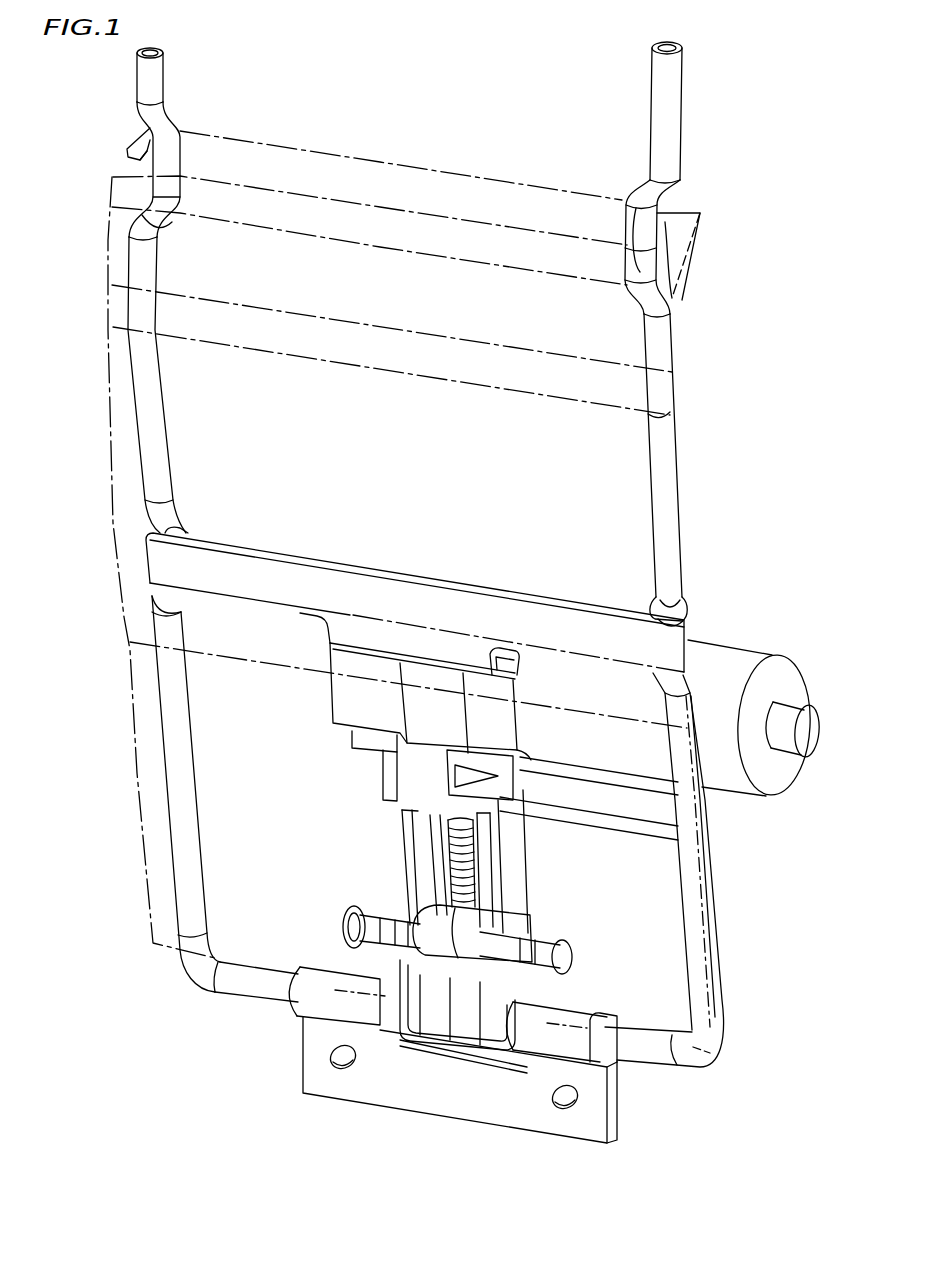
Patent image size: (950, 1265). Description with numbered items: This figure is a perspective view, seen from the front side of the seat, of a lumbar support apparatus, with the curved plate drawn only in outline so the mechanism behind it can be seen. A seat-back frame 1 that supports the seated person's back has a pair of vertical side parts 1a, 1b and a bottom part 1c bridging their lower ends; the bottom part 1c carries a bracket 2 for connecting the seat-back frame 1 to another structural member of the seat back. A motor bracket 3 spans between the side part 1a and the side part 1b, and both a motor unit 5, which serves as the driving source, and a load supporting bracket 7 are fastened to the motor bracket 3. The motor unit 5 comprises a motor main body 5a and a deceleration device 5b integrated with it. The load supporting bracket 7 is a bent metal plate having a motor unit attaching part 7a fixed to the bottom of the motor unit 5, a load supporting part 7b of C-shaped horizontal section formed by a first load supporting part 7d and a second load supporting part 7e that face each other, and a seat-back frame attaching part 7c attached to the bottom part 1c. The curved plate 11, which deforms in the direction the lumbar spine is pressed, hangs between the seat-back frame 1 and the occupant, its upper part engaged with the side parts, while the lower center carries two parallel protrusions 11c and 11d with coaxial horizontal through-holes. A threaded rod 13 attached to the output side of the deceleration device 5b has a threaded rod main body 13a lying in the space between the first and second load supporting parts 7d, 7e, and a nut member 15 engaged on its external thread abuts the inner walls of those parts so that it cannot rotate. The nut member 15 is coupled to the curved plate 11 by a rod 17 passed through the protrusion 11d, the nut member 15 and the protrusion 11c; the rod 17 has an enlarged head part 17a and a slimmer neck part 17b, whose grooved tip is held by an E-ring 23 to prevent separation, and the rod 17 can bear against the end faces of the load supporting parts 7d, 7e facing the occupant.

The seat-back frame 1 is at (391, 546).
The side part 1a is at (668, 108).
The side part 1b is at (146, 418).
The bottom part 1c is at (253, 985).
The bracket 2 is at (600, 1095).
The motor bracket 3 is at (568, 620).
The motor unit 5 is at (735, 691).
The motor main body 5a is at (703, 658).
The deceleration device 5b is at (672, 611).
The load supporting bracket 7 is at (564, 855).
The motor unit attaching part 7a is at (545, 772).
The load supporting part 7b is at (508, 801).
The seat-back frame attaching part 7c is at (543, 1003).
The first load supporting part 7d is at (427, 862).
The second load supporting part 7e is at (503, 870).
The curved plate 11 is at (134, 780).
The protrusion 11c is at (398, 908).
The protrusion 11d is at (440, 887).
The threaded rod 13 is at (385, 852).
The threaded rod main body 13a is at (448, 857).
The nut member 15 is at (377, 987).
The rod 17 is at (419, 1061).
The head part 17a is at (492, 968).
The neck part 17b is at (470, 968).
The E-ring 23 is at (358, 914).